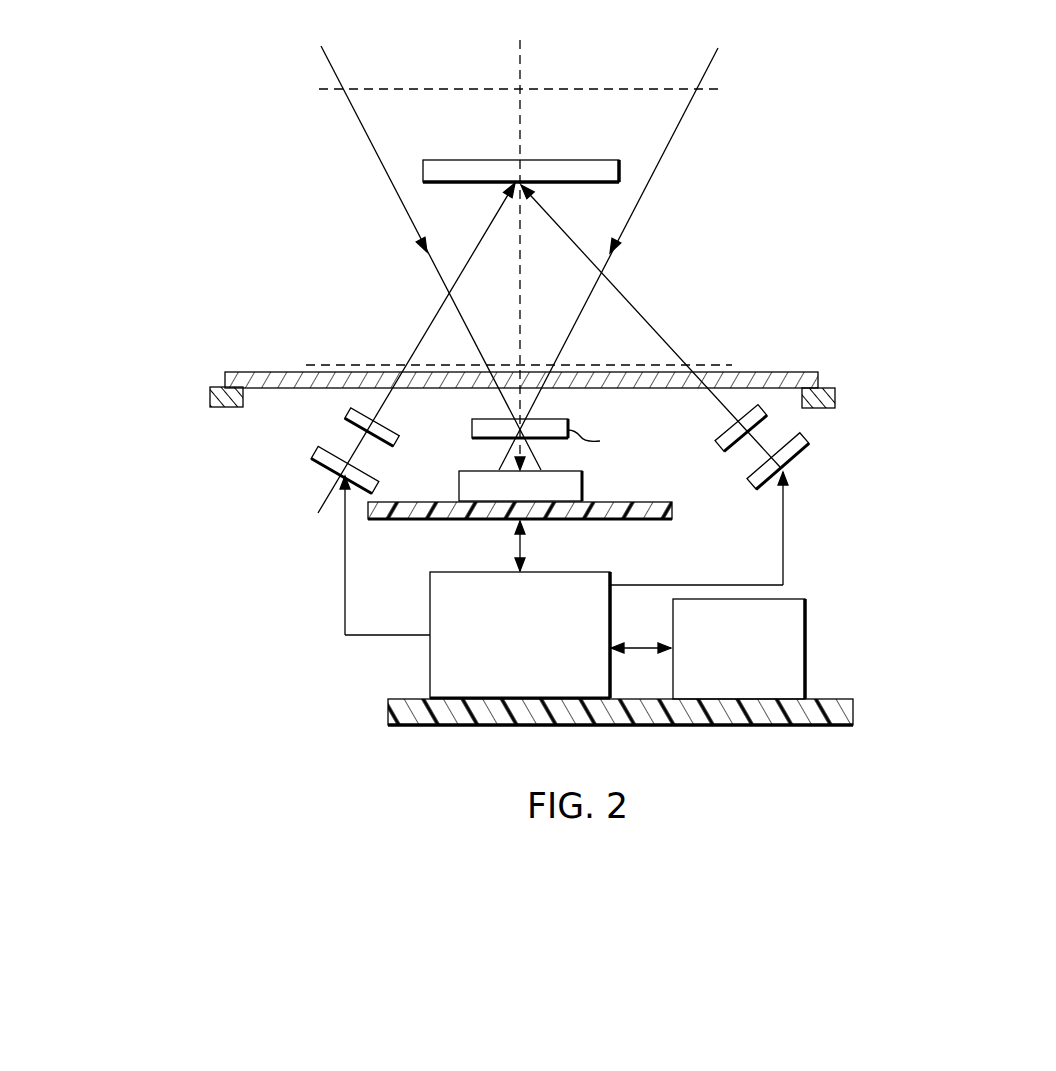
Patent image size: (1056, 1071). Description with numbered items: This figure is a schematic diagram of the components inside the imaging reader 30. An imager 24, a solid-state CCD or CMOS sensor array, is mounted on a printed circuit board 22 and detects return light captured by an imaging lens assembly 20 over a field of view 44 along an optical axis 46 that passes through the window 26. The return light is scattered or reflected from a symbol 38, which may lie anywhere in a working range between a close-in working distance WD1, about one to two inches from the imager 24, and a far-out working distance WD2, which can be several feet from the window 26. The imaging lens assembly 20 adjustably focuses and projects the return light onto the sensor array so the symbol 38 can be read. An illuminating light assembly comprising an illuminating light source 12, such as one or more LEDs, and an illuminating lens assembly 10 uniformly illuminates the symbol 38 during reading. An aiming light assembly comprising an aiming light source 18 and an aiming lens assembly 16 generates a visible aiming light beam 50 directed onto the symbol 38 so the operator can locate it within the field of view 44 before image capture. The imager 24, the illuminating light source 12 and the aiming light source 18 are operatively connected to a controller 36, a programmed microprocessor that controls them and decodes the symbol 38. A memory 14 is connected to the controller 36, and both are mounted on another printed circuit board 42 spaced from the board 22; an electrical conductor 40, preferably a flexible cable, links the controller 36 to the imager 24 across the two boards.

The illuminating lens assembly 10 is at (760, 412).
The illuminating light source 12 is at (797, 440).
The memory 14 is at (805, 623).
The aiming lens assembly 16 is at (349, 427).
The aiming light source 18 is at (318, 455).
The imaging lens assembly 20 is at (472, 428).
The printed circuit board 22 is at (647, 519).
The imager 24 is at (459, 486).
The window 26 is at (258, 372).
The imaging reader 30 is at (712, 270).
The controller 36 is at (430, 667).
The symbol 38 is at (568, 160).
The electrical conductor 40 is at (519, 548).
The printed circuit board 42 is at (830, 699).
The field of view 44 is at (385, 170).
The optical axis 46 is at (521, 68).
The aiming light beam 50 is at (428, 331).
The close-in working distance WD1 is at (708, 365).
The far-out working distance WD2 is at (336, 89).